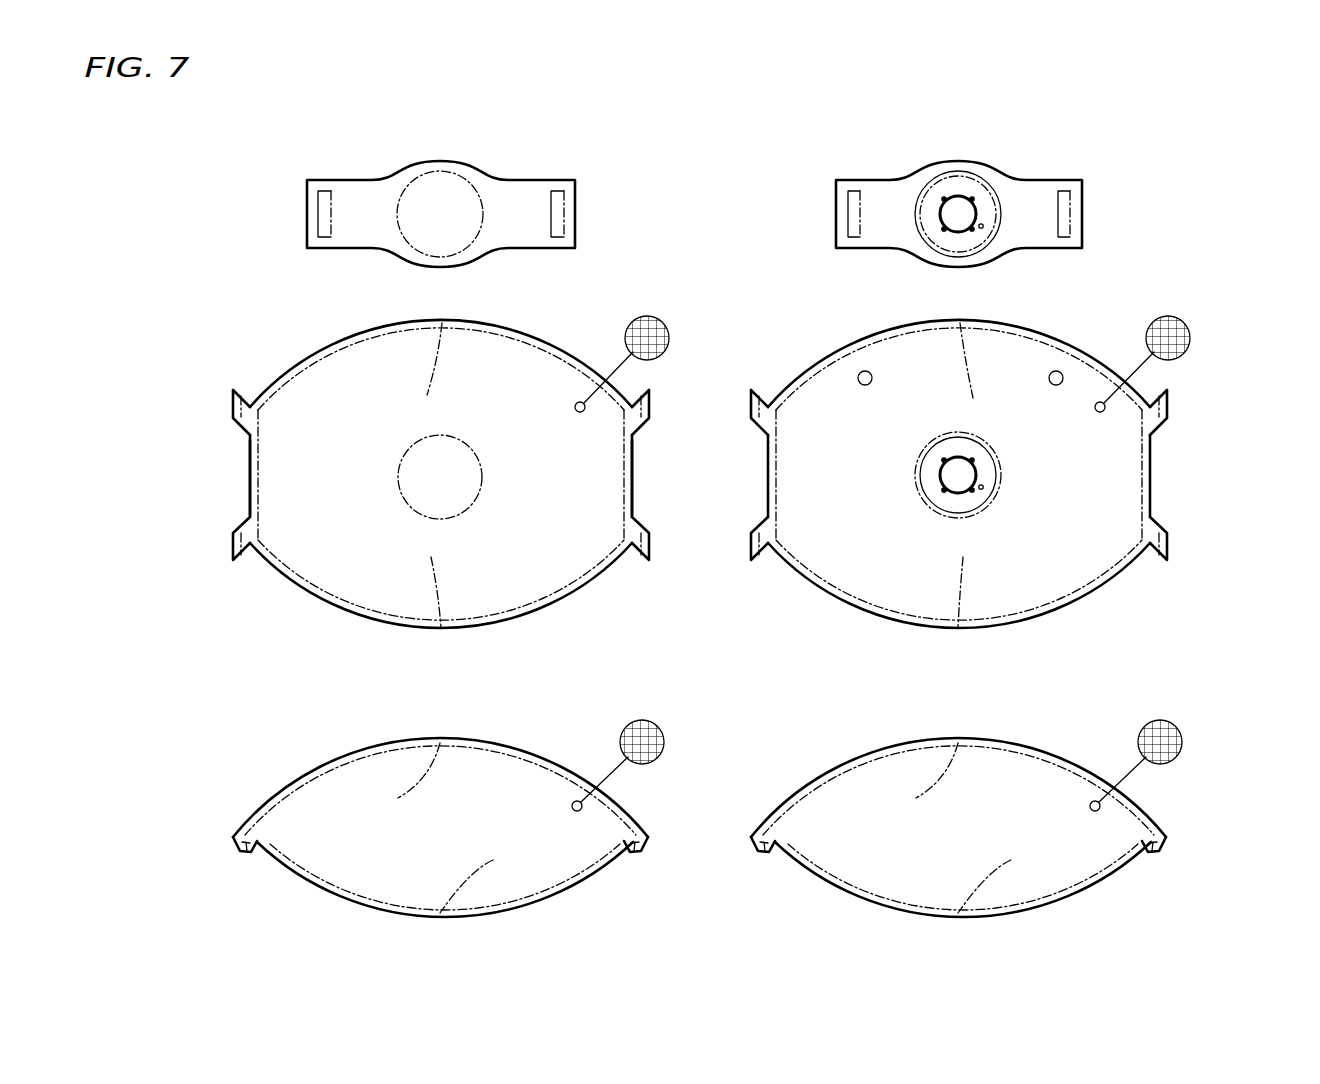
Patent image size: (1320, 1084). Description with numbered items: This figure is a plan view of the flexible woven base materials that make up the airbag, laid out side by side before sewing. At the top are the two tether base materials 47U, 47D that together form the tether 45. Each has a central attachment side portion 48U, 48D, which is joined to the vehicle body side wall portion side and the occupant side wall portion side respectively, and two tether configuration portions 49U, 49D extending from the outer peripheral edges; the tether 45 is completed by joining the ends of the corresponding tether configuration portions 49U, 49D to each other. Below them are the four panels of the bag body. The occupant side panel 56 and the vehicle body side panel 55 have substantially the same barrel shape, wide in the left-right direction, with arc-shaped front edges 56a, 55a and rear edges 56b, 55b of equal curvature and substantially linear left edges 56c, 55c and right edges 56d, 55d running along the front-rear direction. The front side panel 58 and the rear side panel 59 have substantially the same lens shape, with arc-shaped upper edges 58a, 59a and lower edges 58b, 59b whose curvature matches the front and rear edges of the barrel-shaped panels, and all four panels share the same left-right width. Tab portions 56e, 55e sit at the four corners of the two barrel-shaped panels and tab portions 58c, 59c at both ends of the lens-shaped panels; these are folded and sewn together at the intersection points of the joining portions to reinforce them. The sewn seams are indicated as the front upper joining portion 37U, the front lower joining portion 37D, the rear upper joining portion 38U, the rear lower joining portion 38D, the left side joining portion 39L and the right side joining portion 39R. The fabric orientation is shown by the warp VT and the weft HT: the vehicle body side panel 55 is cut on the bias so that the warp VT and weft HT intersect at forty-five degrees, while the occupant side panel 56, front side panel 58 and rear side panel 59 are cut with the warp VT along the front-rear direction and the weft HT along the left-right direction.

The tether 45 is at (770, 170).
The tether base material 47U is at (585, 192).
The tether base material 47D is at (830, 192).
The attachment side portion 48U is at (437, 183).
The attachment side portion 48D is at (972, 183).
The tether configuration portion 49U is at (365, 190).
The tether configuration portion 49D is at (893, 190).
The occupant side panel 56 is at (313, 338).
The front edge 56a is at (445, 322).
The rear edge 56b is at (445, 630).
The left edge 56c is at (638, 505).
The right edge 56d is at (250, 478).
The tab portion 56e is at (233, 405).
The vehicle body side panel 55 is at (1085, 335).
The front edge 55a is at (965, 322).
The rear edge 55b is at (965, 630).
The left edge 55c is at (768, 505).
The right edge 55d is at (1150, 478).
The tab portion 55e is at (760, 400).
The front side panel 58 is at (515, 738).
The upper edge 58a is at (440, 740).
The lower edge 58b is at (440, 920).
The tab portion 58c is at (242, 853).
The rear side panel 59 is at (1033, 738).
The upper edge 59a is at (958, 740).
The lower edge 59b is at (958, 920).
The tab portion 59c is at (760, 853).
The front upper joining portion 37U is at (396, 569).
The front lower joining portion 37D is at (721, 618).
The rear upper joining portion 38U is at (680, 672).
The rear lower joining portion 38D is at (1003, 716).
The right side joining portion 39R is at (257, 478).
The left side joining portion 39L is at (625, 478).
The warp VT is at (665, 330).
The weft HT is at (668, 345).